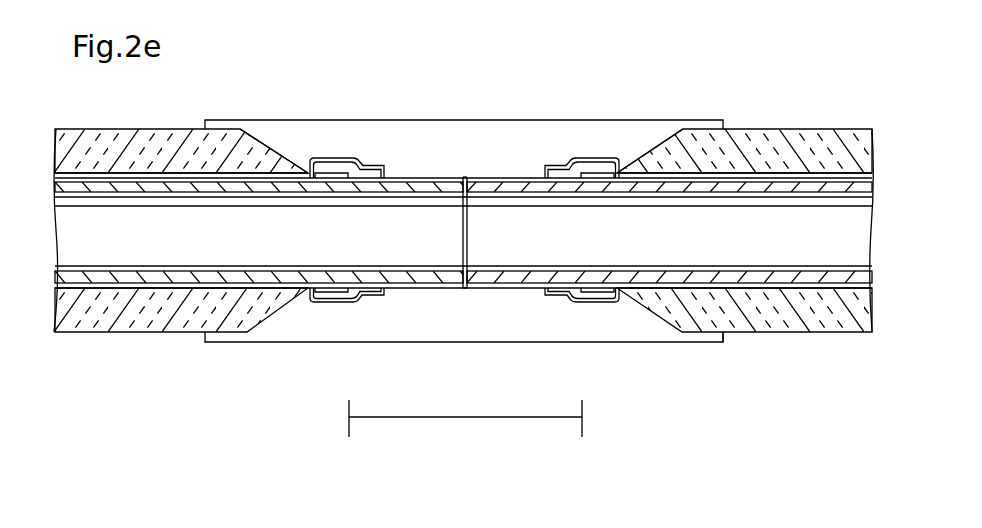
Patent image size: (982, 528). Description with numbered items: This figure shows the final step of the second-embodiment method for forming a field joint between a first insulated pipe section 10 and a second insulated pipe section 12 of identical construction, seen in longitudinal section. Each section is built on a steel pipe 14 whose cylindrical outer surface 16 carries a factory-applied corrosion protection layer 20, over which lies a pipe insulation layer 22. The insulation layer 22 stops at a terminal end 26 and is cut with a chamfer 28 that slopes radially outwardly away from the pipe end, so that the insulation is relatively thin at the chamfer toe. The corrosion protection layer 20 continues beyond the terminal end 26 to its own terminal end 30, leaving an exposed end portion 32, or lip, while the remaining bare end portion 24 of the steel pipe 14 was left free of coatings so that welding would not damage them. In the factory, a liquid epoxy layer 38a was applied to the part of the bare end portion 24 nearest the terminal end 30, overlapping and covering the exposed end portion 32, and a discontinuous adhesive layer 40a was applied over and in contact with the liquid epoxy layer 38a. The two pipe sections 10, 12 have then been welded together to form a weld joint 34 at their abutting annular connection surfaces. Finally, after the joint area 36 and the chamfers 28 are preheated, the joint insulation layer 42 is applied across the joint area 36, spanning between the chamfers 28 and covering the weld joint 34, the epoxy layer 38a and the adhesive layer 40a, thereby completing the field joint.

The first insulated pipe section 10 is at (136, 360).
The second insulated pipe section 12 is at (801, 338).
The steel pipe 14 is at (55, 273).
The cylindrical outer surface 16 is at (138, 293).
The corrosion protection layer 20 is at (186, 289).
The pipe insulation layer 22 is at (72, 318).
The bare end portion 24 is at (388, 176).
The terminal end of the pipe insulation layer 26 is at (313, 160).
The chamfer 28 is at (260, 142).
The terminal end of the corrosion protection layer 30 is at (358, 300).
The exposed end portion of the corrosion protection layer 32 is at (328, 302).
The weld joint 34 is at (463, 177).
The joint area 36 is at (490, 417).
The factory-applied liquid epoxy layer 38a is at (360, 160).
The factory-applied adhesive layer 40a is at (340, 308).
The joint insulation layer 42 is at (444, 123).